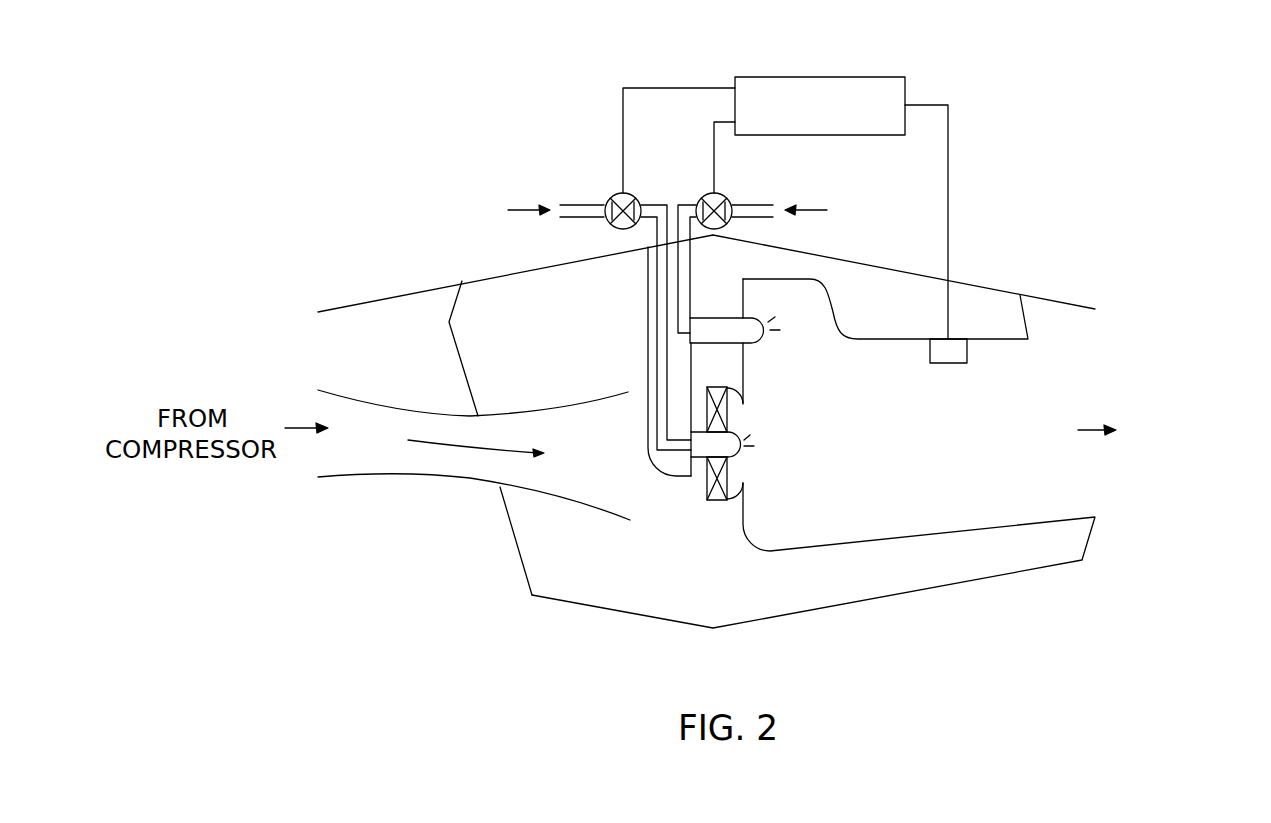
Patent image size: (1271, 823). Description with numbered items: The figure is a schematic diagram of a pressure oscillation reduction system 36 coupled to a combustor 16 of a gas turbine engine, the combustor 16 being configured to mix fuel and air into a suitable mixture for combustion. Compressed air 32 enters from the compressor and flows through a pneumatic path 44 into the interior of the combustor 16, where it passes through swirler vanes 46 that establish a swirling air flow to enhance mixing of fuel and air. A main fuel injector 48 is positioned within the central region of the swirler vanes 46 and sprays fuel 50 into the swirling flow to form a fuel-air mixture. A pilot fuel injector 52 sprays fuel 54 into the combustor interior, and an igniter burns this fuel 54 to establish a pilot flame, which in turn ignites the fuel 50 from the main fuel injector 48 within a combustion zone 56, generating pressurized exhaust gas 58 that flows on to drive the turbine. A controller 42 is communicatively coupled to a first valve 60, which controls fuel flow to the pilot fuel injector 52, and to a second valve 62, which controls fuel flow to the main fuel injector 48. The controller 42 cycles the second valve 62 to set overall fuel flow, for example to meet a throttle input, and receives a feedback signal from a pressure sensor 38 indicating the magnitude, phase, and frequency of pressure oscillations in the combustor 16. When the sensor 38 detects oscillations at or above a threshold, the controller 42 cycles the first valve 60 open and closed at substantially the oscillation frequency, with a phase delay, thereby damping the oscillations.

The combustor 16 is at (997, 228).
The compressed air 32 is at (467, 452).
The pressure oscillation reduction system 36 is at (715, 47).
The pressure sensor 38 is at (930, 355).
The controller 42 is at (843, 76).
The pneumatic path 44 is at (418, 410).
The swirler vanes 46 is at (707, 487).
The main fuel injector 48 is at (728, 452).
The fuel 50 is at (746, 437).
The pilot fuel injector 52 is at (727, 322).
The fuel 54 is at (769, 338).
The combustion zone 56 is at (977, 432).
The pressurized exhaust gas 58 is at (1093, 430).
The first valve 60 is at (721, 193).
The second valve 62 is at (617, 193).